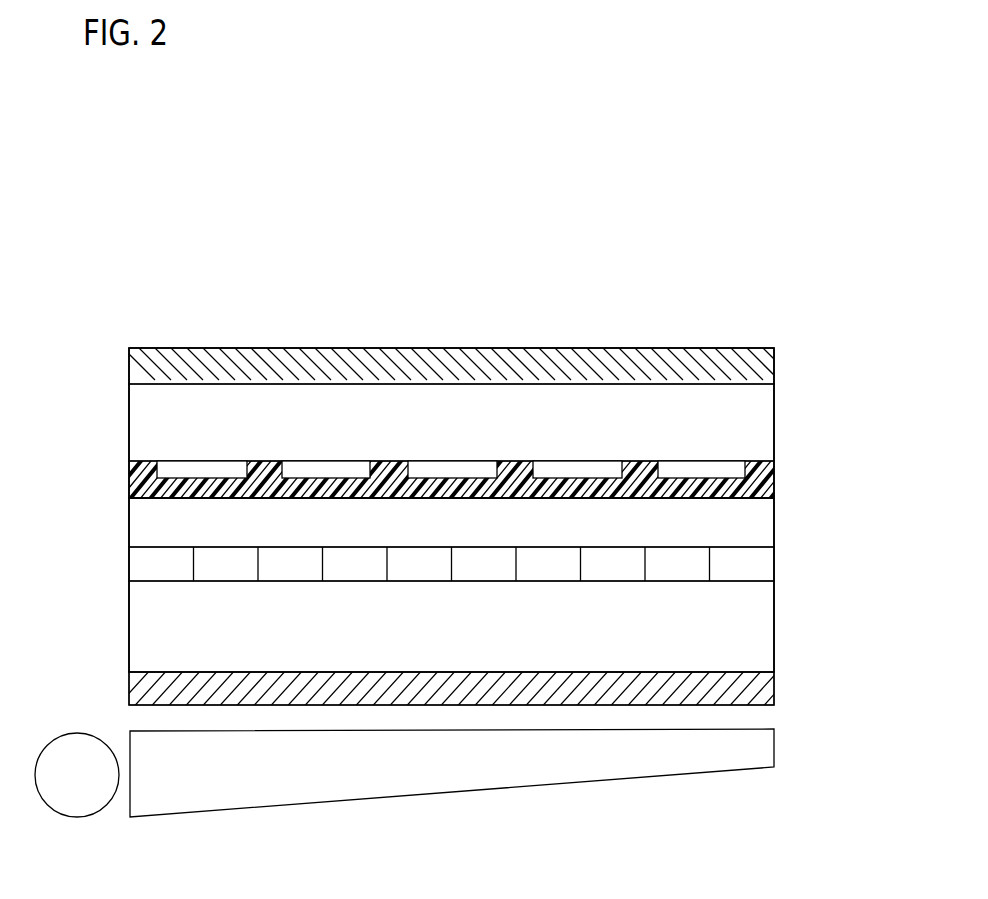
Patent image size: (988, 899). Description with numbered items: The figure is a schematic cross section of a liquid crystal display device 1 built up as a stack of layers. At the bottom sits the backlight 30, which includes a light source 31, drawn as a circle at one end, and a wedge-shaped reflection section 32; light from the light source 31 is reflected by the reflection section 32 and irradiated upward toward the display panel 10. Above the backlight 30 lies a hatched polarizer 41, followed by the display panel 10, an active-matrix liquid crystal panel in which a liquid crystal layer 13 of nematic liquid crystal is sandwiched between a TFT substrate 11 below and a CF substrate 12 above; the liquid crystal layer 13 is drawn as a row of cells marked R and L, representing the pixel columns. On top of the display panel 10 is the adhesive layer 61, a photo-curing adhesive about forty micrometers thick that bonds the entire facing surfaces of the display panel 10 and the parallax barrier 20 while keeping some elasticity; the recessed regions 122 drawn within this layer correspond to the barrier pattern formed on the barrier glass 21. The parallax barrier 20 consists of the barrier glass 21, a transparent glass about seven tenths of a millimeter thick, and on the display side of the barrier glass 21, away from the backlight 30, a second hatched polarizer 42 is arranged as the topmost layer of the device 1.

The liquid crystal display device 1 is at (764, 198).
The display panel 10 is at (850, 499).
The TFT substrate 11 is at (768, 620).
The CF substrate 12 is at (768, 515).
The liquid crystal layer 13 is at (768, 562).
The parallax barrier 20 is at (848, 378).
The barrier glass 21 is at (768, 420).
The adhesive layer 61 is at (774, 486).
The electrode 122 is at (706, 462).
The polarizer 41 is at (774, 688).
The polarizer 42 is at (774, 366).
The backlight 30 is at (842, 727).
The light source 31 is at (77, 743).
The reflection section 32 is at (774, 748).